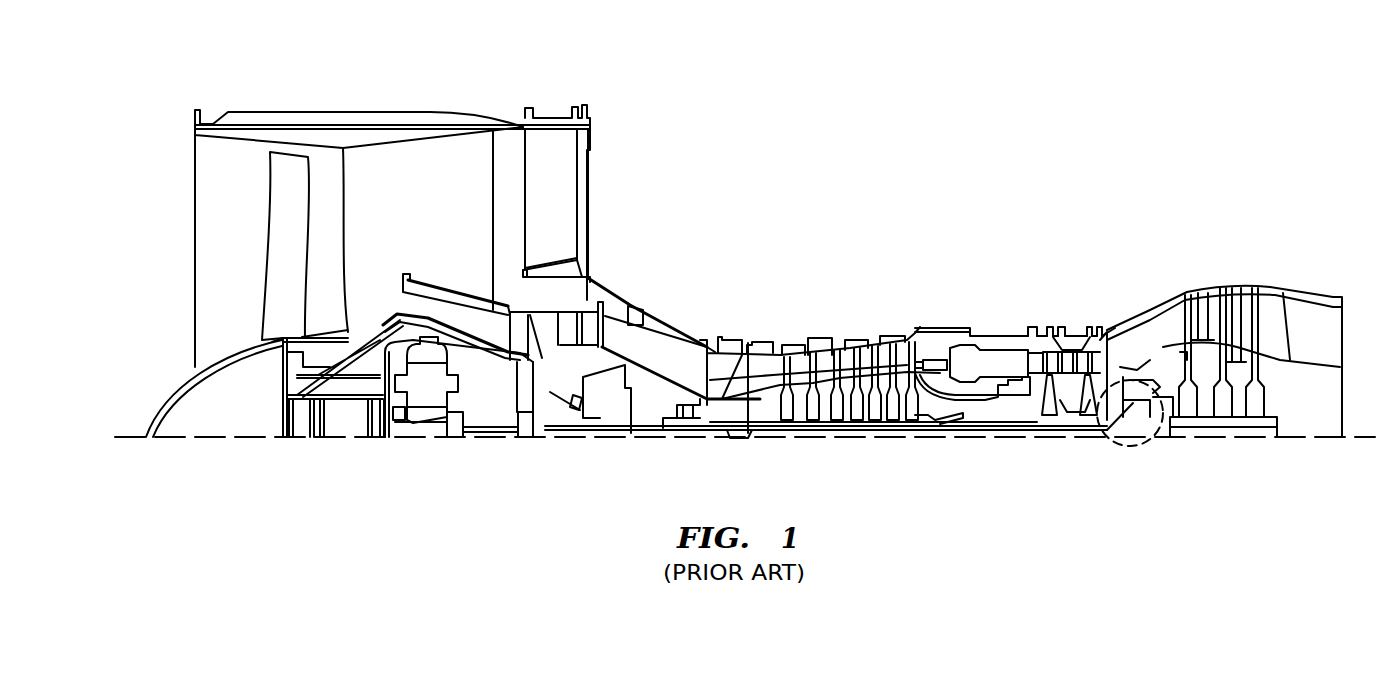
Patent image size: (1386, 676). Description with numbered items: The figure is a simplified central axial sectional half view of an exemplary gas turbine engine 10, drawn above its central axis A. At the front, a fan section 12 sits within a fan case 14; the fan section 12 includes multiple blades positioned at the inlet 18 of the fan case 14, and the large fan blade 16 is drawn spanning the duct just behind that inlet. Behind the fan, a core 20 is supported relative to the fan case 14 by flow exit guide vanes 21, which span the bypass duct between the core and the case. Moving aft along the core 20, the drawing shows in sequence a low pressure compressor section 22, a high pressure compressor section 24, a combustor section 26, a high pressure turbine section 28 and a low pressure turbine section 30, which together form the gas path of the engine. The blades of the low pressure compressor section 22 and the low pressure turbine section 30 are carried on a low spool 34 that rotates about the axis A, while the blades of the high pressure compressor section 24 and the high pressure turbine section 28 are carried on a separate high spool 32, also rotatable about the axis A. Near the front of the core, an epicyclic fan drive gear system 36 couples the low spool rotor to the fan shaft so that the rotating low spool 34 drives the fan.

The gas turbine engine 10 is at (938, 147).
The fan section 12 is at (195, 78).
The fan case 14 is at (398, 123).
The fan blade 16 is at (284, 262).
The inlet 18 is at (178, 285).
The core 20 is at (1280, 291).
The flow exit guide vanes 21 is at (540, 204).
The low pressure compressor section 22 is at (643, 78).
The high pressure compressor section 24 is at (935, 298).
The combustor section 26 is at (1035, 298).
The high pressure turbine section 28 is at (1105, 298).
The low pressure turbine section 30 is at (1170, 220).
The high spool 32 is at (950, 422).
The low spool 34 is at (1148, 437).
The epicyclic fan drive gear system 36 is at (423, 447).